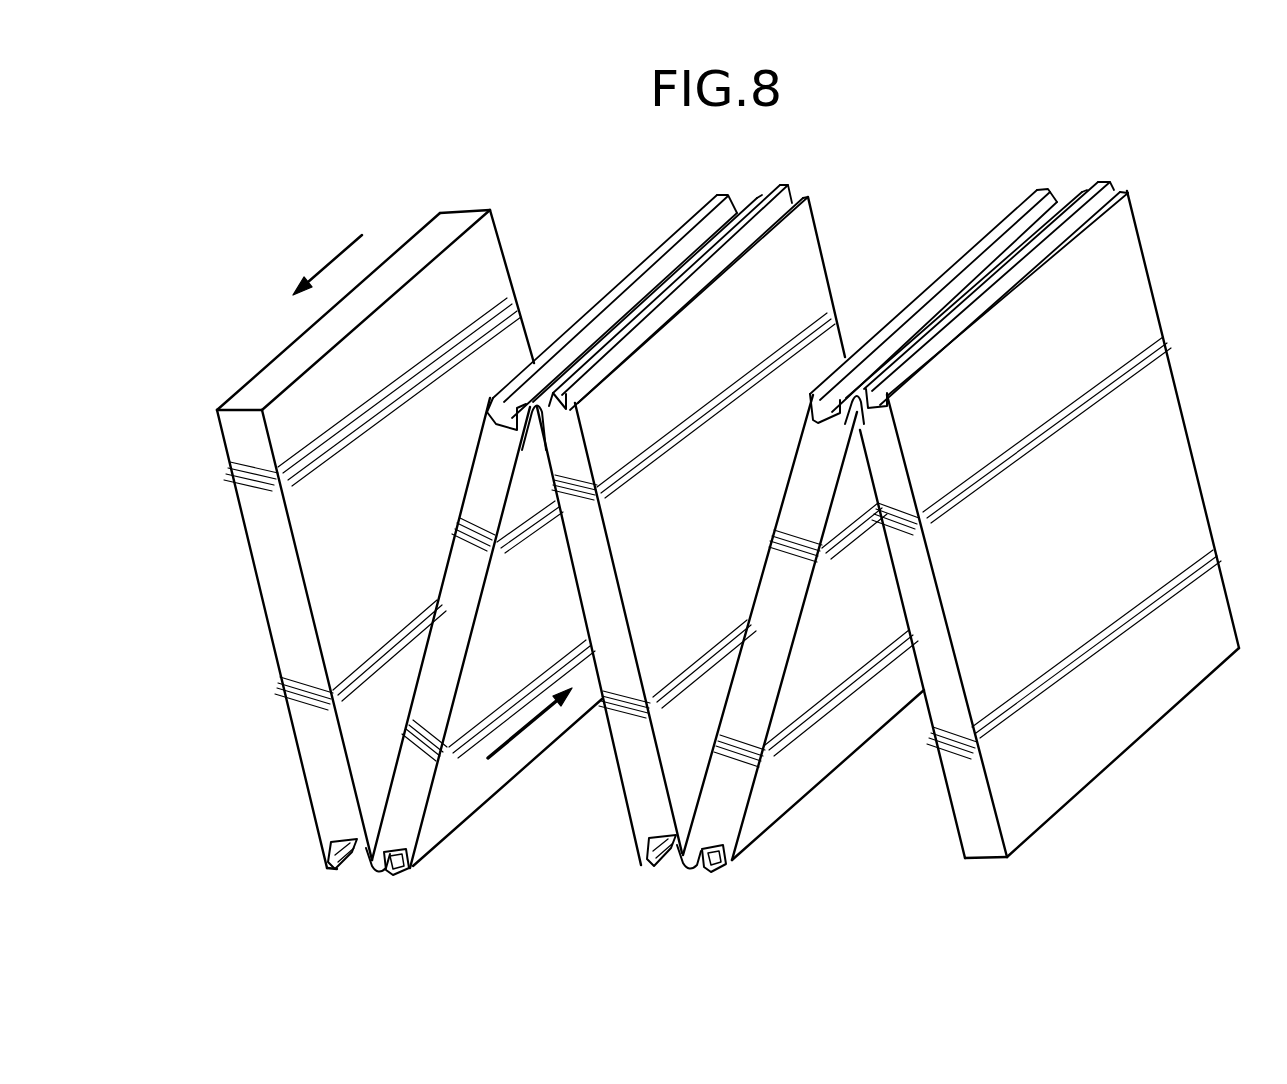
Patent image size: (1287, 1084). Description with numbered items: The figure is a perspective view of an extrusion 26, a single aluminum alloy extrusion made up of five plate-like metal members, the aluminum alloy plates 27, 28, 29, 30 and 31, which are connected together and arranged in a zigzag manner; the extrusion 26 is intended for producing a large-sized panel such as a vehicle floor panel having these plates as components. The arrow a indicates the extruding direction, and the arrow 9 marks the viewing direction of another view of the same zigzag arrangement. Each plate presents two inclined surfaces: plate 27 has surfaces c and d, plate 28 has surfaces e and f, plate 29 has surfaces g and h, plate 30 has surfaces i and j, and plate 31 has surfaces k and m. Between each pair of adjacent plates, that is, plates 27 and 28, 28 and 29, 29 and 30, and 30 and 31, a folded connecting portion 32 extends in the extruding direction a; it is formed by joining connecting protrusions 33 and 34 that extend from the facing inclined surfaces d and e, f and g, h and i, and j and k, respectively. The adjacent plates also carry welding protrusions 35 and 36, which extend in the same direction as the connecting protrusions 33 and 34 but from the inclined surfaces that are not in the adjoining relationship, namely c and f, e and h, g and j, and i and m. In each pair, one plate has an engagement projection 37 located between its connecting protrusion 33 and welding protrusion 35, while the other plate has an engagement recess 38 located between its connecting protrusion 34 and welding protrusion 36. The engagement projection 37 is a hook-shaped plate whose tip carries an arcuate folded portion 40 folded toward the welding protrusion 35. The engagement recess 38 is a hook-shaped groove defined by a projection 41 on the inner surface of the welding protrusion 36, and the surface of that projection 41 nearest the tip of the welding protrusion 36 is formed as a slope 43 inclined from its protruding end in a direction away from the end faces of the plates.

The extrusion 26 is at (1190, 340).
The aluminum alloy plate 27 is at (950, 803).
The aluminum alloy plate 28 is at (795, 802).
The aluminum alloy plate 29 is at (622, 793).
The aluminum alloy plate 30 is at (456, 817).
The aluminum alloy plate 31 is at (283, 722).
The folded connecting portion 32 is at (855, 380).
The connecting protrusion 33 is at (860, 426).
The connecting protrusion 34 is at (838, 428).
The welding protrusion 35 is at (918, 368).
The welding protrusion 36 is at (806, 414).
The engagement projection 37 is at (972, 306).
The engagement recess 38 is at (832, 422).
The arcuate folded portion 40 is at (722, 866).
The projection 41 is at (1057, 210).
The slope 43 is at (818, 392).
The extruding direction a is at (350, 238).
The section line of FIG. 9 is at (511, 746).
The inclined surface c is at (956, 602).
The inclined surface d is at (899, 588).
The inclined surface e is at (806, 594).
The inclined surface f is at (768, 548).
The inclined surface g is at (636, 590).
The inclined surface h is at (576, 572).
The inclined surface i is at (490, 614).
The inclined surface j is at (442, 568).
The inclined surface k is at (312, 596).
The inclined surface m is at (246, 565).